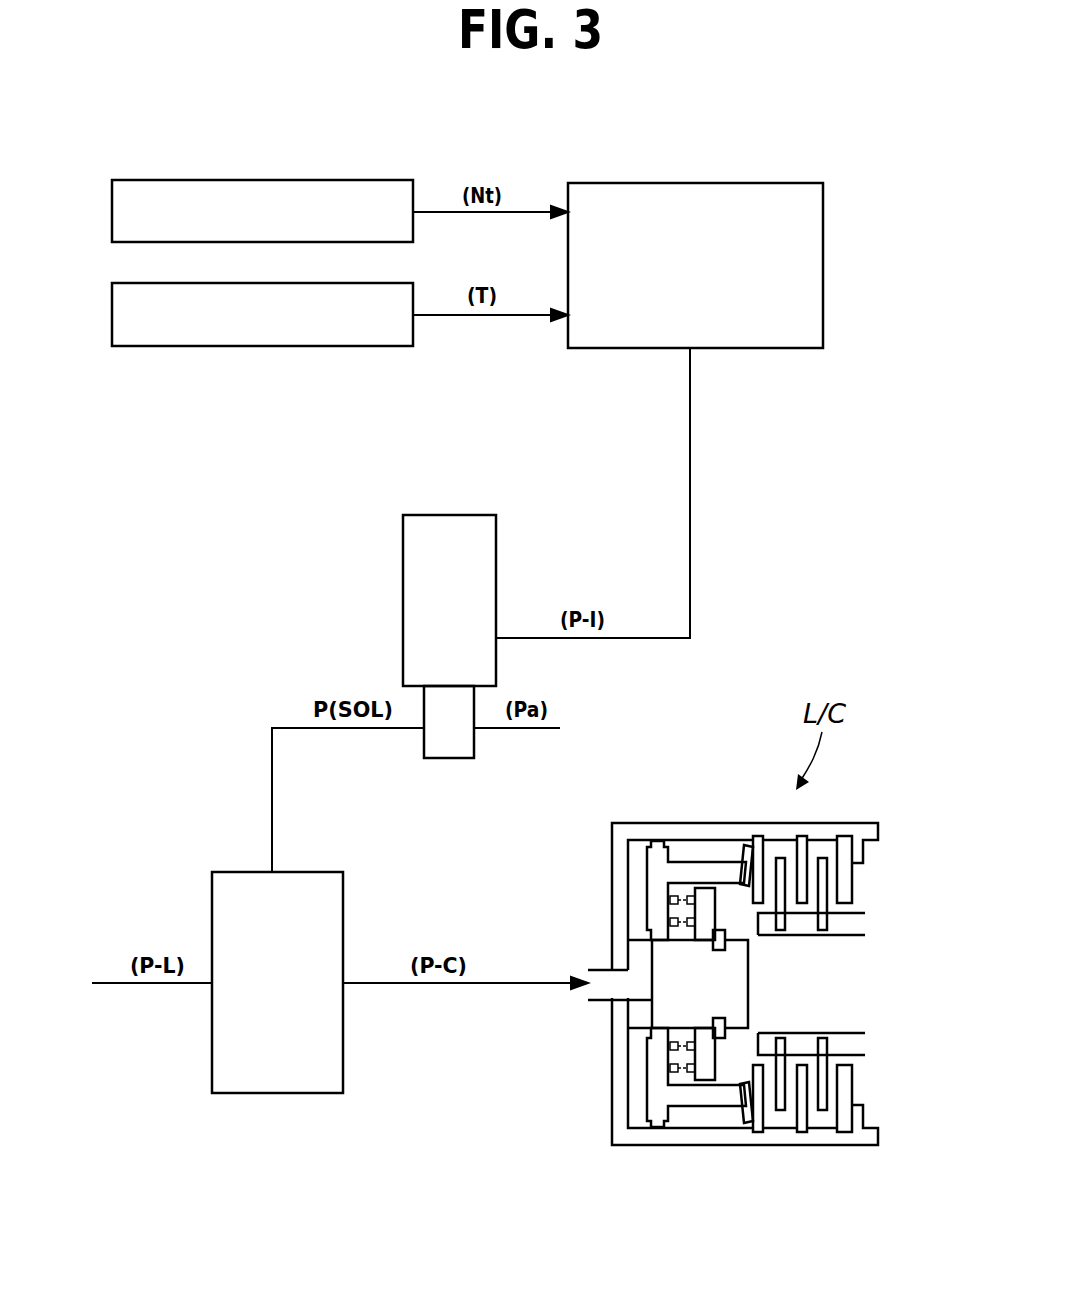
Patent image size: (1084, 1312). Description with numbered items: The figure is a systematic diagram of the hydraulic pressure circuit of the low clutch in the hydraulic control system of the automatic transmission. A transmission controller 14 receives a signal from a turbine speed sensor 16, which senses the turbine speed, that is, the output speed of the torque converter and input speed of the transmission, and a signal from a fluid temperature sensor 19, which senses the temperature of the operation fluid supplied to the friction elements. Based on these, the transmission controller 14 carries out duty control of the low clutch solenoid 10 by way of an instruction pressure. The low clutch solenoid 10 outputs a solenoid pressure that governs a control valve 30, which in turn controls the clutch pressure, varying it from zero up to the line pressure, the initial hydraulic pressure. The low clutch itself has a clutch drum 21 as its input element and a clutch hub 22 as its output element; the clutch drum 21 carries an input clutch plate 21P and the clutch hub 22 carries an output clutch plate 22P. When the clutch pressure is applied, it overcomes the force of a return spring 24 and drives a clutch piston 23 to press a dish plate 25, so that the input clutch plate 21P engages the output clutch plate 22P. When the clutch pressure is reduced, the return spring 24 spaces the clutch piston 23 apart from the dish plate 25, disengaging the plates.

The low clutch solenoid 10 is at (403, 575).
The transmission controller 14 is at (693, 183).
The turbine speed sensor 16 is at (262, 180).
The fluid temperature sensor 19 is at (263, 346).
The clutch drum 21 is at (818, 833).
The input clutch plate 21P is at (843, 883).
The clutch hub 22 is at (840, 1040).
The output clutch plate 22P is at (823, 1110).
The clutch piston 23 is at (700, 868).
The return spring 24 is at (682, 895).
The dish plate 25 is at (742, 833).
The control valve 30 is at (343, 1075).